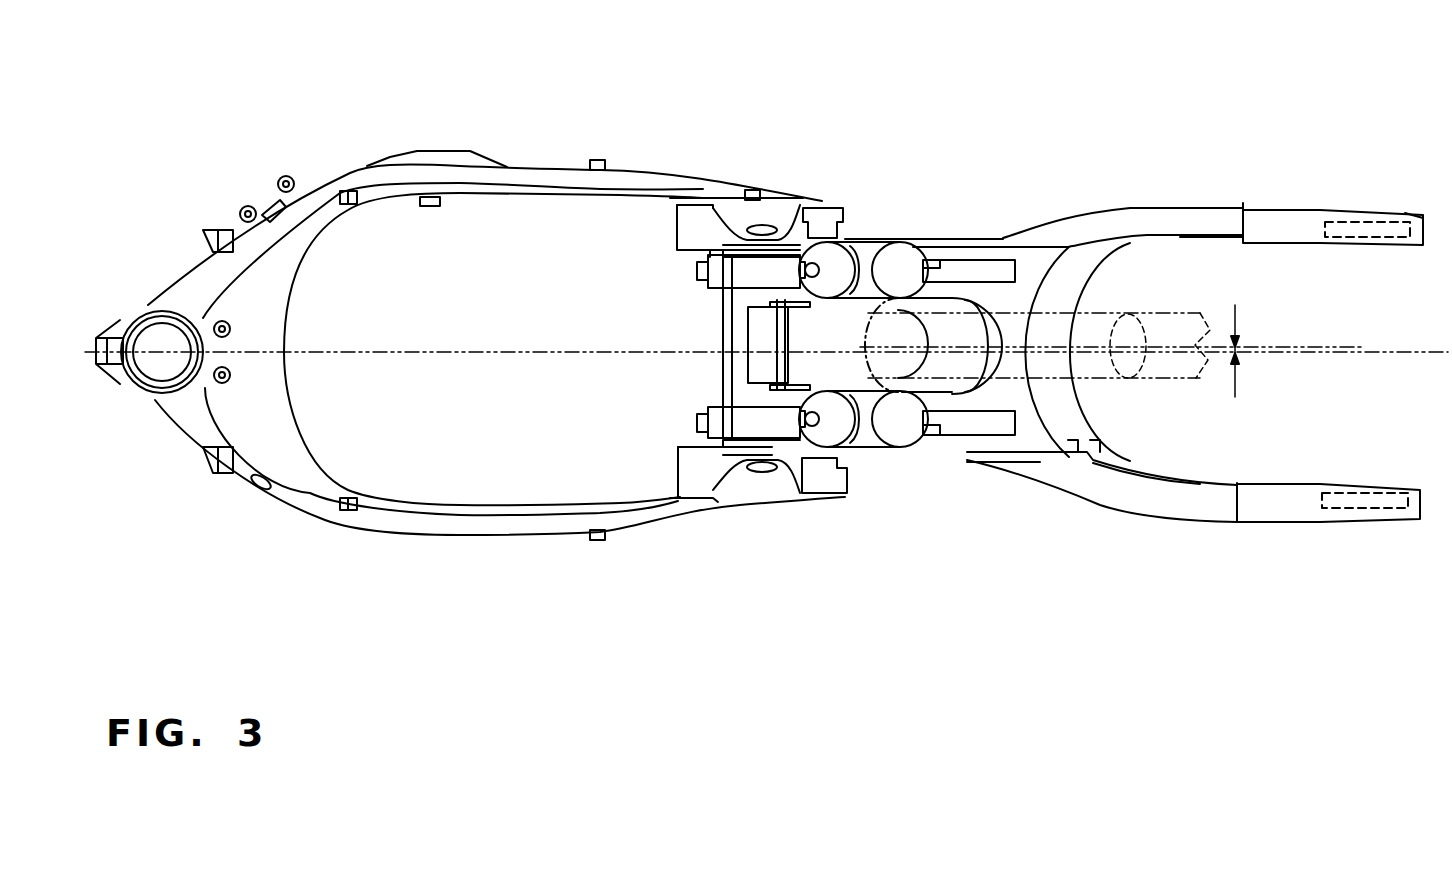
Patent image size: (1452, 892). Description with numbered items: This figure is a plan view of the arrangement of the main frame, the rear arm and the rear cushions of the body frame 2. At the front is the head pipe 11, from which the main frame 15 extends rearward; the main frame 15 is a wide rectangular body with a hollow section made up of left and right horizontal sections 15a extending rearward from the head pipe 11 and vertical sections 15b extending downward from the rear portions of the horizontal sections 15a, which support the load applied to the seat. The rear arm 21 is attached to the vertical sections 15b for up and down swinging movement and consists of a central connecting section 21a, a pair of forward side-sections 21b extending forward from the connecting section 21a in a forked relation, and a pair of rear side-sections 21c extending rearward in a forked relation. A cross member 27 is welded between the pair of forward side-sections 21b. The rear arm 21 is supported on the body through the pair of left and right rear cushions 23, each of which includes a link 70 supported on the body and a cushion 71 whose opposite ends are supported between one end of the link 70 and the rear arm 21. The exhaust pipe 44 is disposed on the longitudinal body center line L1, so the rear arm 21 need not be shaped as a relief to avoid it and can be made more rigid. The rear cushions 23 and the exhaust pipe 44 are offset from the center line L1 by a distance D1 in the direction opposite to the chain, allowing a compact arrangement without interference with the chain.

The body frame 2 is at (528, 104).
The head pipe 11 is at (150, 305).
The main frame 15 is at (497, 318).
The horizontal sections 15a is at (558, 178).
The vertical sections 15b is at (762, 204).
The link 70 is at (748, 268).
The cross member 27 is at (720, 327).
The rear arm 21 is at (1111, 334).
The central connecting section 21a is at (1023, 262).
The forward side-sections 21b is at (812, 228).
The rear side-sections 21c is at (1283, 215).
The rear cushions 23 is at (886, 207).
The cushion 71 is at (875, 246).
The exhaust pipe 44 is at (1175, 331).
The distance D1 is at (1360, 349).
The longitudinal body center line L1 is at (1431, 357).